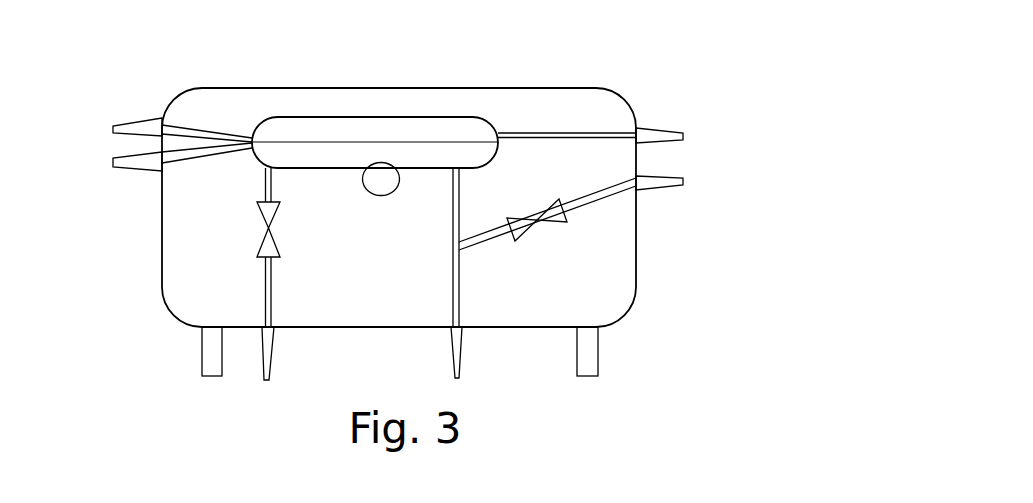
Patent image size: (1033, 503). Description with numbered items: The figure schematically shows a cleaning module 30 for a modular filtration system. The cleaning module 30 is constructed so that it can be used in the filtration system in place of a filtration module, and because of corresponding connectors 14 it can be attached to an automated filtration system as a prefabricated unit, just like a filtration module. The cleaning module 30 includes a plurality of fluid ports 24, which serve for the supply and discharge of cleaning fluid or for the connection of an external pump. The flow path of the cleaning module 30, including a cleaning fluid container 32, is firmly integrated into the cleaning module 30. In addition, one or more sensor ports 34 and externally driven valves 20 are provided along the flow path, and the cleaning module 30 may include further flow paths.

The connector 14 is at (599, 341).
The externally driven valve 20 is at (280, 252).
The fluid port 24 is at (137, 120).
The cleaning module 30 is at (531, 83).
The cleaning fluid container 32 is at (405, 125).
The sensor port 34 is at (383, 197).